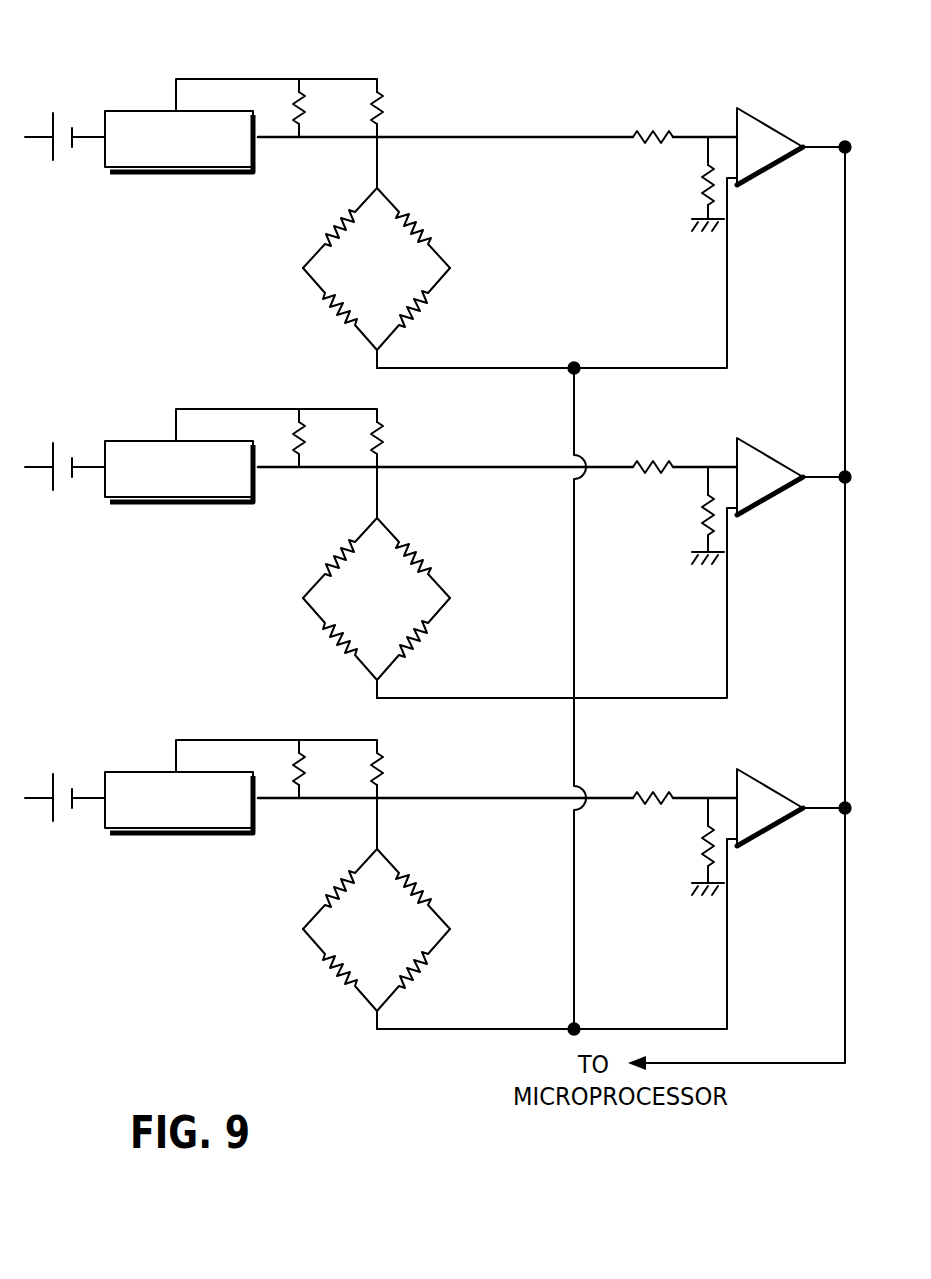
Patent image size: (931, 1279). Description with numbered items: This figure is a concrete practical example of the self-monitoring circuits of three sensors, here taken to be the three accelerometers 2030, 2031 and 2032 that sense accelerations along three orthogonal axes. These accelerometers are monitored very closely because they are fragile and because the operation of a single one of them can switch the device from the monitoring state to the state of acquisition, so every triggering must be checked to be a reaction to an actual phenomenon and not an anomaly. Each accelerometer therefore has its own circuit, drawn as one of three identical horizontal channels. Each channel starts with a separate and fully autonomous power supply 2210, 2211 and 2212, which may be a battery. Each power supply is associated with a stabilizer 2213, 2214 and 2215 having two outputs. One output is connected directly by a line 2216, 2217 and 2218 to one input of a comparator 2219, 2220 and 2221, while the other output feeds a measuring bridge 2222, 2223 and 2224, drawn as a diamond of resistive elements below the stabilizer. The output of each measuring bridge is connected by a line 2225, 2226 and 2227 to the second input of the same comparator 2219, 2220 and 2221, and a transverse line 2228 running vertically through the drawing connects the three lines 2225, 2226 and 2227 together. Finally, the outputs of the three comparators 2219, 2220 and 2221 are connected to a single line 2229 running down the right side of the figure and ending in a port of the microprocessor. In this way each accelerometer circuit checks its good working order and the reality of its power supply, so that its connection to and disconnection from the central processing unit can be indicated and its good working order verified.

The power supply 2210 is at (66, 93).
The power supply 2211 is at (77, 413).
The power supply 2212 is at (77, 744).
The stabilizer 2213 is at (135, 170).
The stabilizer 2214 is at (161, 504).
The stabilizer 2215 is at (160, 836).
The line 2216 is at (570, 137).
The line 2217 is at (497, 439).
The line 2218 is at (497, 770).
The comparator 2219 is at (762, 142).
The comparator 2220 is at (771, 480).
The comparator 2221 is at (771, 811).
The measuring bridge 2222 is at (446, 204).
The measuring bridge 2223 is at (428, 582).
The measuring bridge 2224 is at (428, 913).
The line 2225 is at (665, 368).
The line 2226 is at (557, 603).
The line 2227 is at (557, 937).
The transverse line 2228 is at (575, 568).
The single line 2229 is at (845, 592).
The accelerometer 2030 is at (230, 259).
The accelerometer 2031 is at (438, 517).
The accelerometer 2032 is at (438, 851).